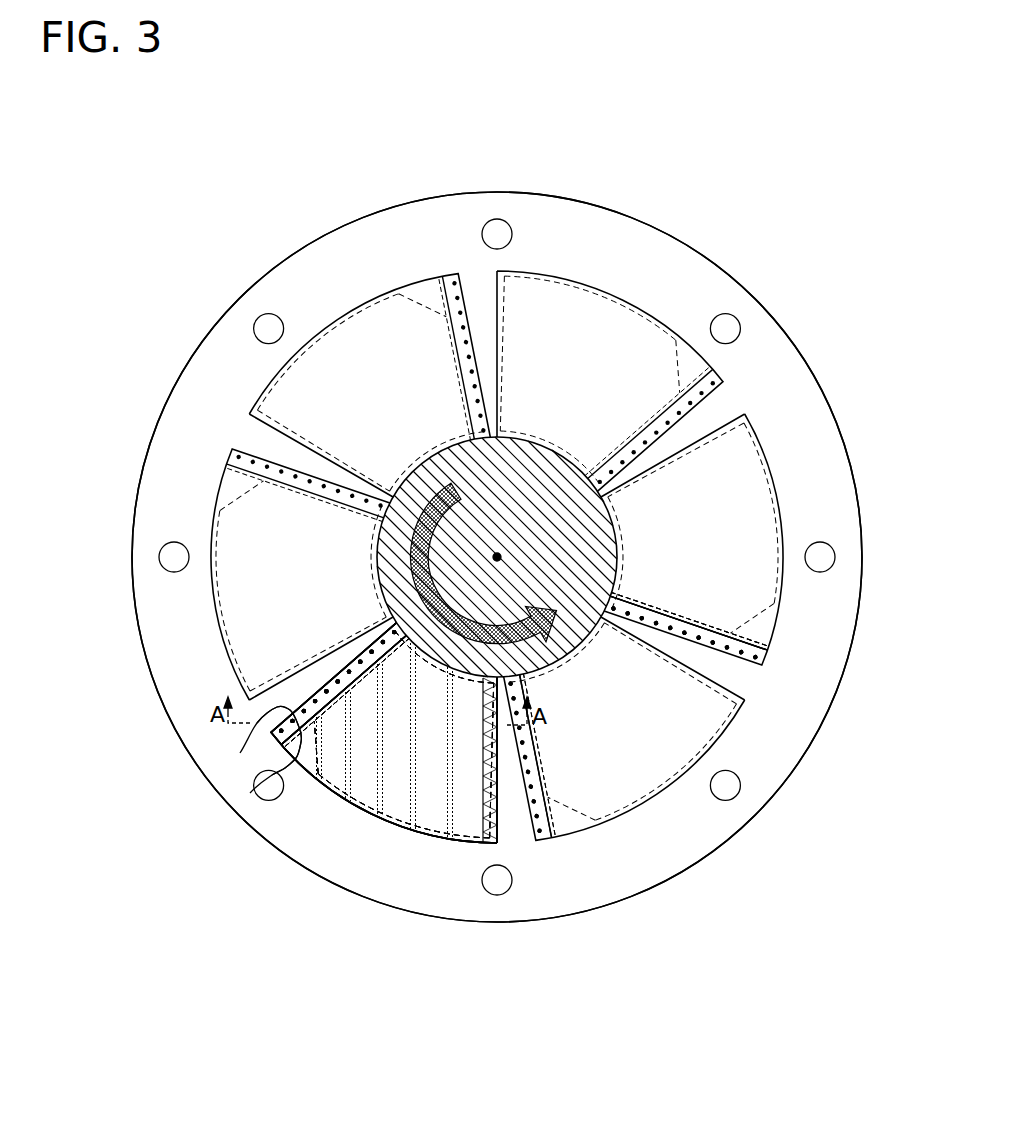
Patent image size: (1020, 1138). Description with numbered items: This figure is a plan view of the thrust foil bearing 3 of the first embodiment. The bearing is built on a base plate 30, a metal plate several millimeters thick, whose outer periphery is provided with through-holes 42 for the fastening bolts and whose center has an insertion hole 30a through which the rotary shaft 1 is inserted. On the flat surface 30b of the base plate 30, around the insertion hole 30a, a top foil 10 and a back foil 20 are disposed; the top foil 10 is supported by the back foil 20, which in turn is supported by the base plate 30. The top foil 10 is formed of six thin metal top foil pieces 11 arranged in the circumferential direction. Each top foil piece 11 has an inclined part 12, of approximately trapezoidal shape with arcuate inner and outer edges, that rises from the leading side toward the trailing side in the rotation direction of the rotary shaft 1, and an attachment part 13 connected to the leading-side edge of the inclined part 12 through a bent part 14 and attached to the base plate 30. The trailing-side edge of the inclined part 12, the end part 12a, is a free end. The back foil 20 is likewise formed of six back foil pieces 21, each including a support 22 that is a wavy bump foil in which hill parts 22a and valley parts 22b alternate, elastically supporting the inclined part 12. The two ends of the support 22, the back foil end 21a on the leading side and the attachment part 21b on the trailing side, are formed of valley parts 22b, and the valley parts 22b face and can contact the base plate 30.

The rotary shaft 1 is at (427, 467).
The thrust foil bearing 3 is at (473, 522).
The top foil 10 is at (373, 813).
The top foil piece 11 is at (384, 843).
The inclined part 12 is at (428, 812).
The end part on the other side in the circumferential direction 12a is at (500, 808).
The attachment part 13 is at (240, 753).
The bent part 14 is at (272, 775).
The back foil 20 is at (391, 812).
The back foil piece 21 is at (384, 816).
The back foil end 21a is at (314, 757).
The attachment part 21b is at (540, 793).
The support 22 is at (358, 966).
The hill part 22a is at (377, 763).
The valley part 22b is at (354, 763).
The base plate 30 is at (472, 193).
The insertion hole 30a is at (585, 608).
The flat surface 30b is at (733, 673).
The through-hole 42 is at (159, 557).